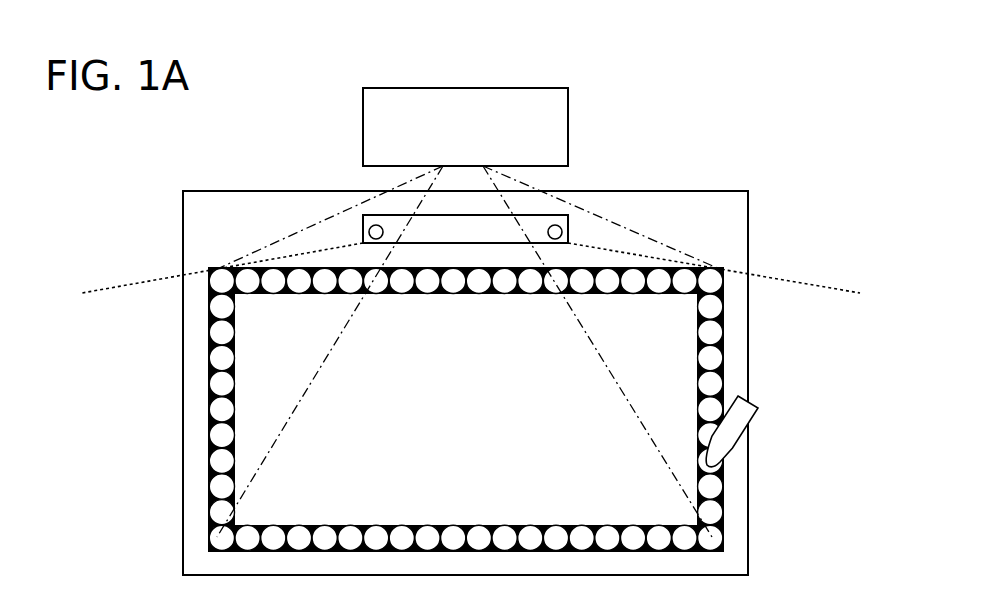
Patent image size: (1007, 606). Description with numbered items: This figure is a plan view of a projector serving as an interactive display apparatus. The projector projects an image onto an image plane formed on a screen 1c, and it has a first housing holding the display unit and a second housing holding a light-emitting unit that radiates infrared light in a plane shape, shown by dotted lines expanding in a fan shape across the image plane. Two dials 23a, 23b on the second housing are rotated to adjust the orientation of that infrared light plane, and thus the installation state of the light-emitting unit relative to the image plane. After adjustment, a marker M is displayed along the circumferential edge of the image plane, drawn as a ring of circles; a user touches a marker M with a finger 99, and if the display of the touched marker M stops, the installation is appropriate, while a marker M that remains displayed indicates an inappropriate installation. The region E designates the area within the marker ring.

The screen 1c is at (504, 378).
The dial 23a is at (616, 197).
The dial 23b is at (320, 196).
The marker M is at (469, 403).
The detection area E is at (468, 351).
The finger 99 is at (766, 432).